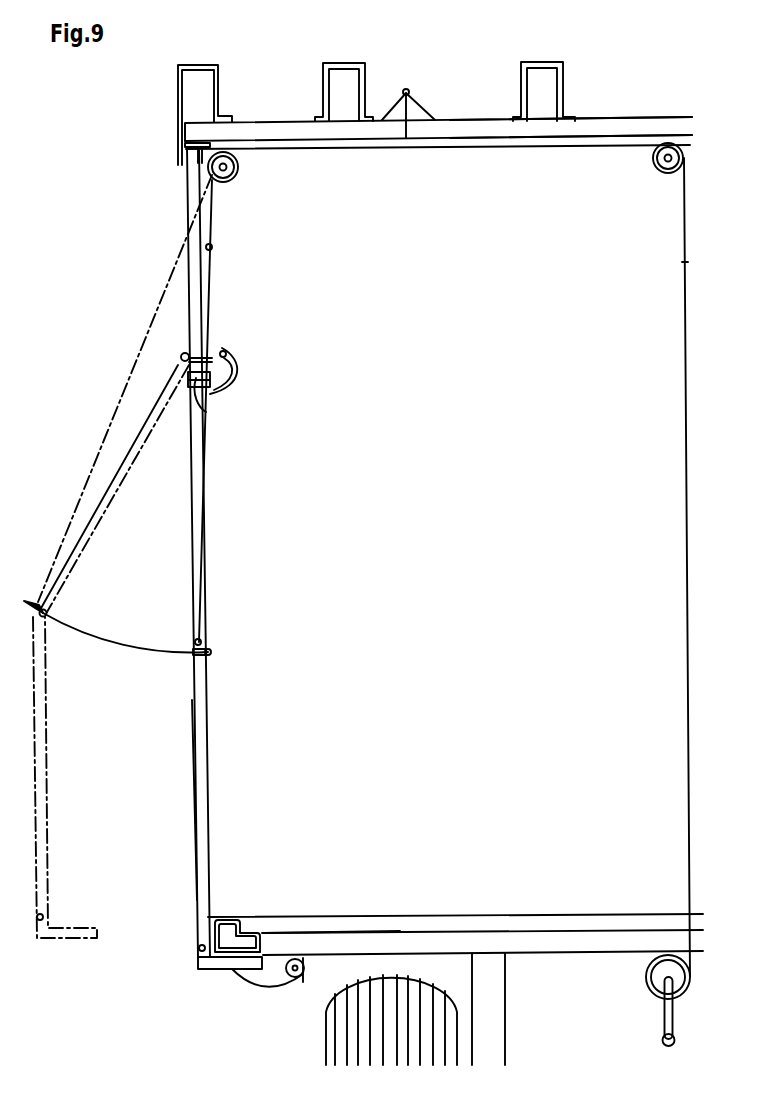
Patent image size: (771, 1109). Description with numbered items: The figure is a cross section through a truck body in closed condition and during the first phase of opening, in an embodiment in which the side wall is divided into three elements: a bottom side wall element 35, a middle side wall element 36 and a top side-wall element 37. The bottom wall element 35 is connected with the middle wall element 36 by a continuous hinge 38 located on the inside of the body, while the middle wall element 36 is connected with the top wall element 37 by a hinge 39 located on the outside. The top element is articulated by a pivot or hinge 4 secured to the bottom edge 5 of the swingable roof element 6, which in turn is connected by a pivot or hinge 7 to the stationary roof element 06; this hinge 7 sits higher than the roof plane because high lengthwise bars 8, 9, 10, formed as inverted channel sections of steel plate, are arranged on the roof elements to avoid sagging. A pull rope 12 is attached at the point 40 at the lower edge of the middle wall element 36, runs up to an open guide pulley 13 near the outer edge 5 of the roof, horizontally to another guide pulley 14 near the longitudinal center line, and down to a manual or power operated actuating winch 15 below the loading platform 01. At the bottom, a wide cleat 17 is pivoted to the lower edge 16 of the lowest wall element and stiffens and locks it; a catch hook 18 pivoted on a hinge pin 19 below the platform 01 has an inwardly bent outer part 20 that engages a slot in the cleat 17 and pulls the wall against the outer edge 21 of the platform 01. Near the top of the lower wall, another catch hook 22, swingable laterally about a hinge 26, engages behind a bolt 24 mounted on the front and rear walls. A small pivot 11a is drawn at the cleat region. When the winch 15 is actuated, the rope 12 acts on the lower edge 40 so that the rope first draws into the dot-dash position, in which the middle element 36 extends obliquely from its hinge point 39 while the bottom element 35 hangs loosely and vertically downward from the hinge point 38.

The pivot or hinge 4 is at (185, 148).
The bottom edge of the roof element 5 is at (186, 135).
The swingable roof element 6 is at (279, 132).
The stationary roof element 06 is at (605, 124).
The pivot or hinge 7 is at (407, 89).
The lengthwise bar 8 is at (200, 78).
The lengthwise bar 9 is at (345, 76).
The lengthwise bar 10 is at (541, 72).
The loading platform 01 is at (553, 922).
The pivot pin 11a is at (198, 949).
The pull rope 12 is at (213, 248).
The open guide pulley 13 is at (228, 169).
The guide pulley 14 is at (657, 172).
The actuating winch 15 is at (648, 987).
The lower edge of the bottom side-wall element 16 is at (275, 947).
The wide cleat 17 is at (222, 970).
The catch hook 18 is at (272, 984).
The hinge pin 19 is at (303, 971).
The inwardly bent outer part 20 is at (239, 957).
The outer edge of the platform 21 is at (224, 920).
The catch hook 22 is at (233, 377).
The bolt 24 is at (226, 350).
The hinge 26 is at (207, 411).
The bottom side wall element 35 is at (46, 762).
The middle side wall element 36 is at (100, 506).
The top side-wall element 37 is at (190, 268).
The continuous hinge 38 is at (47, 613).
The hinge 39 is at (181, 356).
The attachment point 40 is at (196, 639).